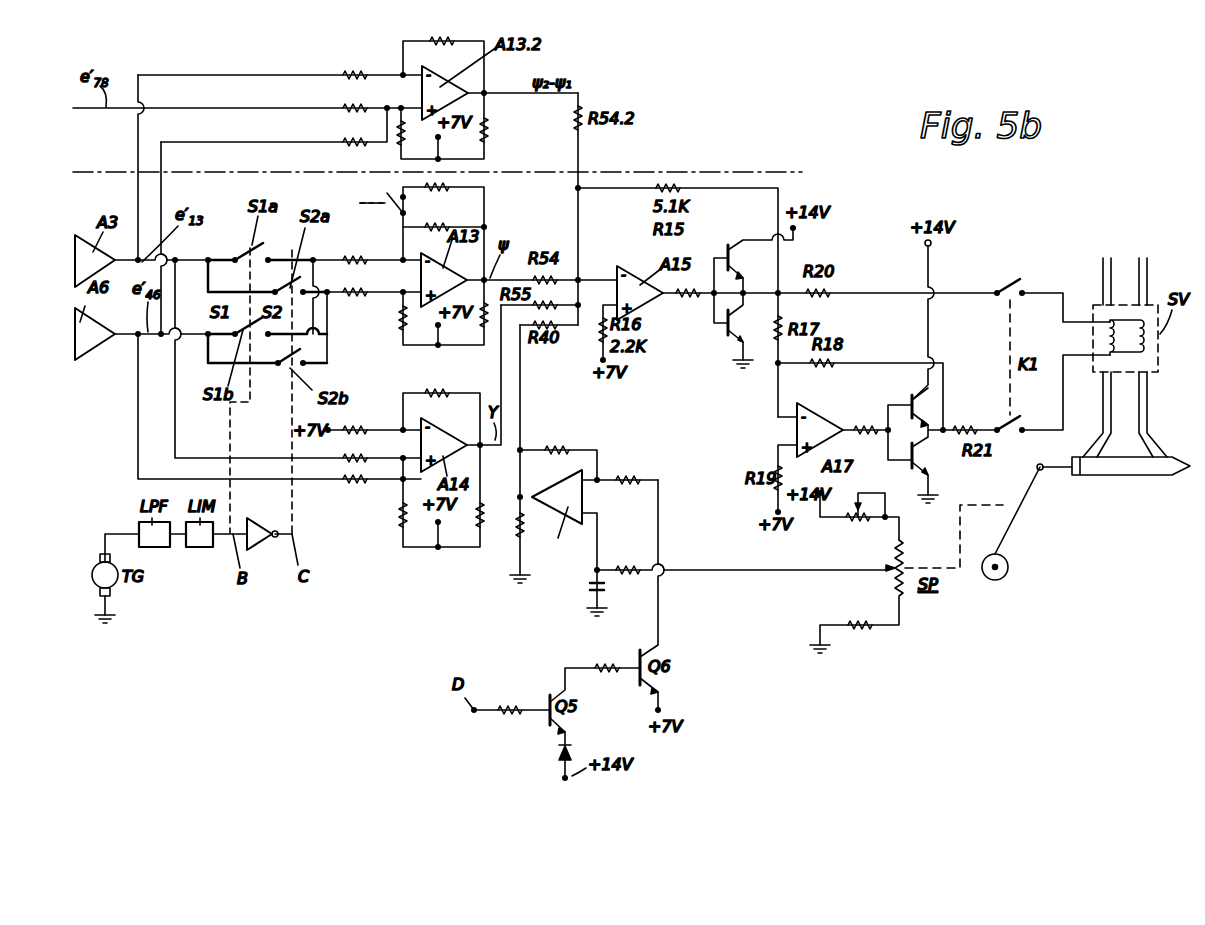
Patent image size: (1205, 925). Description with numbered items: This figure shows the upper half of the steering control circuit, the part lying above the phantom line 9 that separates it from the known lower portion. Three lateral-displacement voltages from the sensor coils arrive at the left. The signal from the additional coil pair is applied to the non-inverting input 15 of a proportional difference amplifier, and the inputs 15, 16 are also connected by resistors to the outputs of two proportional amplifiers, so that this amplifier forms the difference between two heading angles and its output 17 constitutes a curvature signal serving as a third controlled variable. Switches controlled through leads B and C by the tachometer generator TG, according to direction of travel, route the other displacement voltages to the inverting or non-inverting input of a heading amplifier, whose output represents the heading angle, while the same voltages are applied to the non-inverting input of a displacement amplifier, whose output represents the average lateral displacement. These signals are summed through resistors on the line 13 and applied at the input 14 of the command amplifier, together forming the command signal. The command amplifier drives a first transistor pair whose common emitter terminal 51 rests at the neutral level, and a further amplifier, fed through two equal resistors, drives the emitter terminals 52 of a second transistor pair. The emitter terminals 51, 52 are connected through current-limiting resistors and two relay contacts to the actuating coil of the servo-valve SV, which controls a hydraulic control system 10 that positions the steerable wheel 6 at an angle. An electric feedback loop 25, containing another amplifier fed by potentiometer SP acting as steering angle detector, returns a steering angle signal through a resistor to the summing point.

The input of amplifier A13.2 16 is at (440, 85).
The non-inverting input of amplifier A13.2 15 is at (422, 110).
The output line of difference amplifier (ψ2-ψ1) 17 is at (470, 93).
The signal line 13 is at (580, 239).
The input line of amplifier A15 14 is at (578, 280).
The phantom line 9 is at (770, 171).
The emitter terminals 51 is at (753, 296).
The emitter terminals 52 is at (915, 440).
The electric feedback loop 25 is at (562, 575).
The hydraulic control system 10 is at (1128, 468).
The steerable wheel 6 is at (1008, 567).